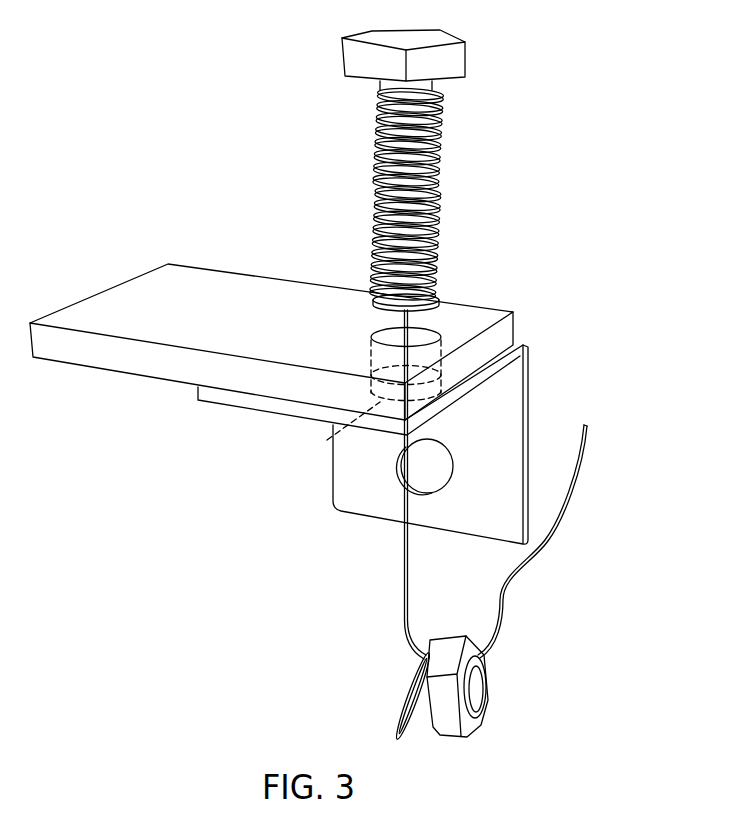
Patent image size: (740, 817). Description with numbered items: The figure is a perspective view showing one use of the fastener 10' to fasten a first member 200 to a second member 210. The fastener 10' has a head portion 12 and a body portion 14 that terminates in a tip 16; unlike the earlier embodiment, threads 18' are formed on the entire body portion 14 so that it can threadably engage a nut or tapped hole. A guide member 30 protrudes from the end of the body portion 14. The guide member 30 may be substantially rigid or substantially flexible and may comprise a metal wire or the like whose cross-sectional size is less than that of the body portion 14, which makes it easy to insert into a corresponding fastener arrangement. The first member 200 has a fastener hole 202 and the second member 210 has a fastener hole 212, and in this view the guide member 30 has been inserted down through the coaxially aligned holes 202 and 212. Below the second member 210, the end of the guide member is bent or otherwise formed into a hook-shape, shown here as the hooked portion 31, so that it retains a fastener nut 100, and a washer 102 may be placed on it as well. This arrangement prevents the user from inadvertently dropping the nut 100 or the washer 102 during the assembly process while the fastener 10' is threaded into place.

The fastener 10' is at (448, 170).
The head portion 12 is at (493, 53).
The body portion 14 is at (432, 148).
The threads 18' is at (432, 243).
The tip 16 is at (437, 300).
The first member 200 is at (514, 320).
The fastener hole 202 is at (381, 336).
The second member 210 is at (530, 407).
The fastener hole 212 is at (332, 437).
The guide member 30 is at (403, 595).
The wire loop 31 is at (500, 621).
The fastener nut 100 is at (485, 723).
The washer 102 is at (401, 725).